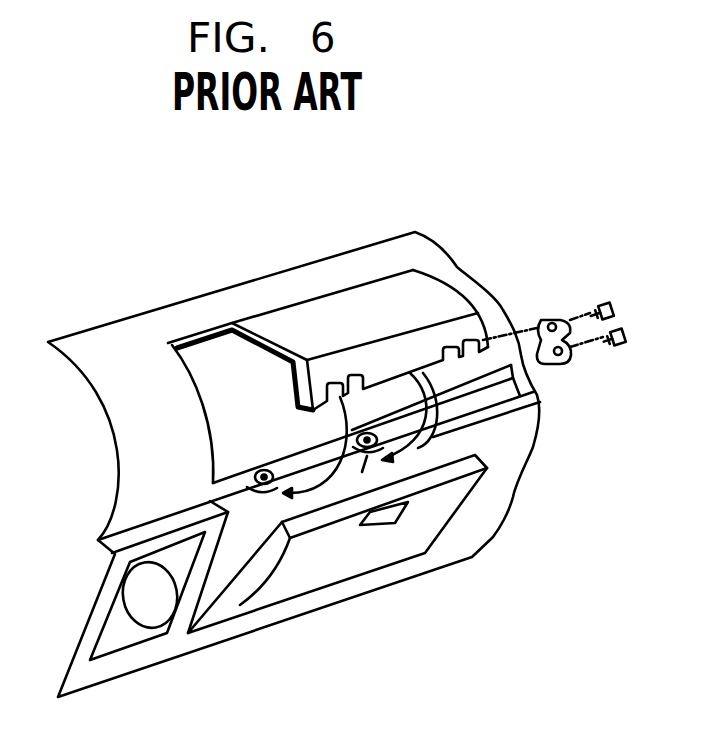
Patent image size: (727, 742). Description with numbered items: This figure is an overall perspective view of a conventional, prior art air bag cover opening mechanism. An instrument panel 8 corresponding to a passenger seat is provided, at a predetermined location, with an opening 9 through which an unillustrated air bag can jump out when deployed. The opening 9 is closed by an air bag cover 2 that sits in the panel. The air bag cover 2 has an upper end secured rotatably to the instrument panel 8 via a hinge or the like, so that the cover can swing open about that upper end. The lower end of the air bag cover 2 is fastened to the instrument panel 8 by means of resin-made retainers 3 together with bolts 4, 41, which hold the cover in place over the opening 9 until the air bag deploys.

The air bag cover 2 is at (415, 285).
The resin-made retainer 3 is at (570, 360).
The bolt 4 is at (625, 336).
The bolt 41 is at (612, 310).
The instrument panel 8 is at (230, 298).
The opening 9 is at (227, 392).